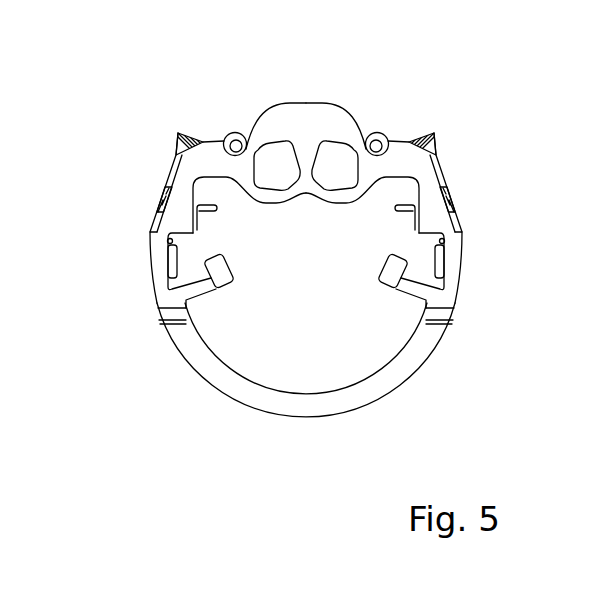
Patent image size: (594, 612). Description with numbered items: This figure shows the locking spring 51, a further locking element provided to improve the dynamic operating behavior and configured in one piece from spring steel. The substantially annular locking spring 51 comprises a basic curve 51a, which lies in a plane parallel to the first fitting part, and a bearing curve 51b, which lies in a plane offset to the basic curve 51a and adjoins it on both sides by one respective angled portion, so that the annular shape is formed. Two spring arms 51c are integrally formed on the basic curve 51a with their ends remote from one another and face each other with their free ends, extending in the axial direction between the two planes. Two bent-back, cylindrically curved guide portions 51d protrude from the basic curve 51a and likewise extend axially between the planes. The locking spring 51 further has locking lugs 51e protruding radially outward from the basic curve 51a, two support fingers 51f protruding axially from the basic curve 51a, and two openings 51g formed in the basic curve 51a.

The locking spring 51 is at (462, 299).
The basic curve 51a is at (437, 200).
The bearing curve 51b is at (394, 373).
The spring arms 51c is at (232, 135).
The guide portions 51d is at (170, 265).
The locking lugs 51e is at (178, 143).
The support fingers 51f is at (210, 208).
The openings 51g is at (275, 155).